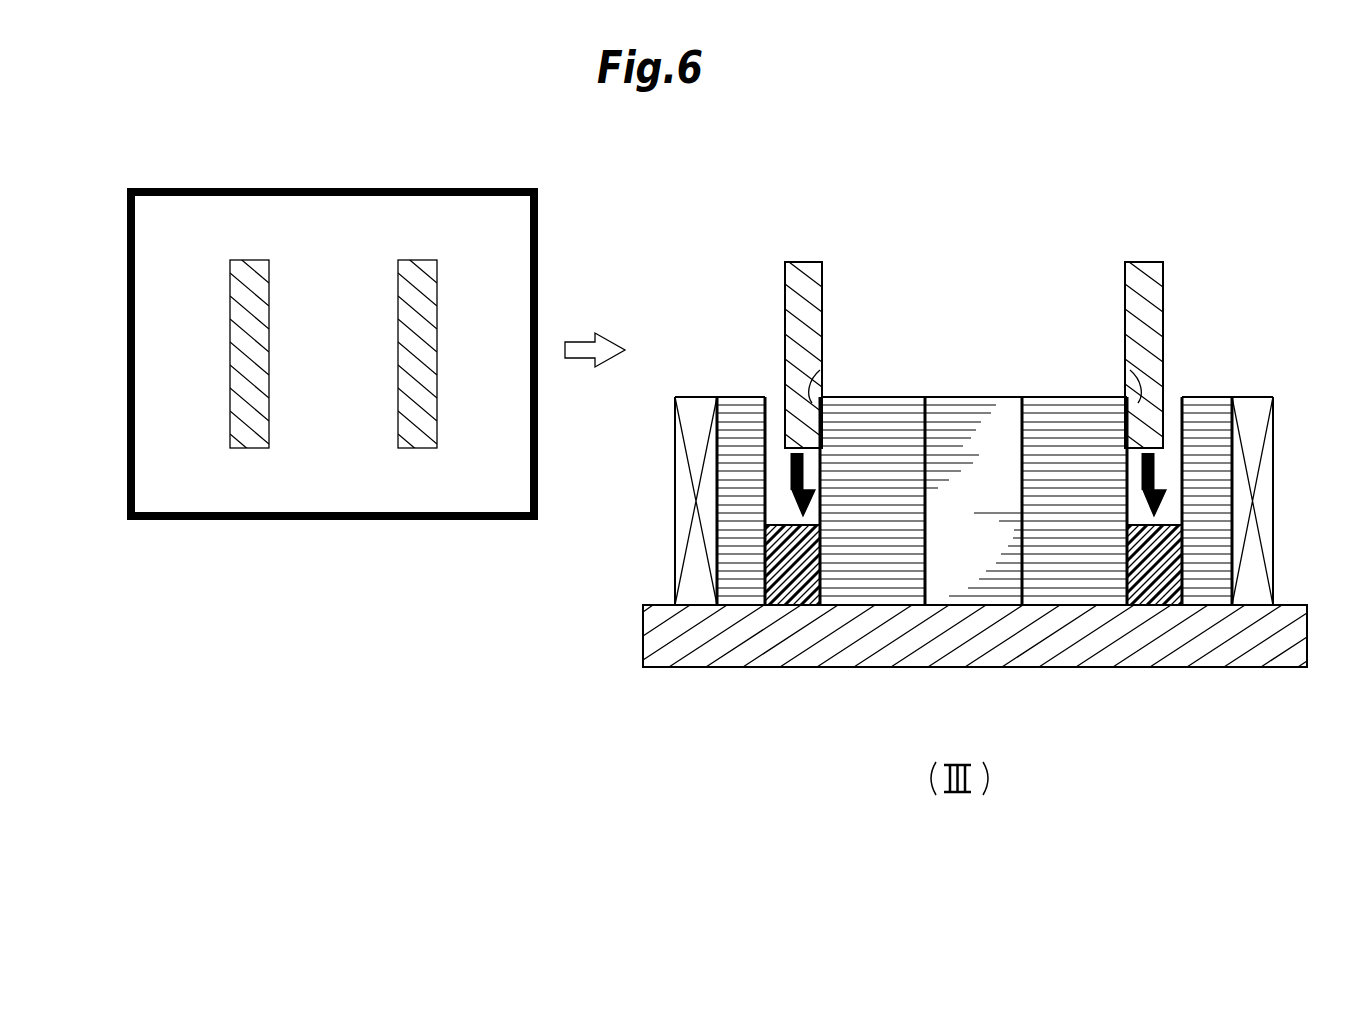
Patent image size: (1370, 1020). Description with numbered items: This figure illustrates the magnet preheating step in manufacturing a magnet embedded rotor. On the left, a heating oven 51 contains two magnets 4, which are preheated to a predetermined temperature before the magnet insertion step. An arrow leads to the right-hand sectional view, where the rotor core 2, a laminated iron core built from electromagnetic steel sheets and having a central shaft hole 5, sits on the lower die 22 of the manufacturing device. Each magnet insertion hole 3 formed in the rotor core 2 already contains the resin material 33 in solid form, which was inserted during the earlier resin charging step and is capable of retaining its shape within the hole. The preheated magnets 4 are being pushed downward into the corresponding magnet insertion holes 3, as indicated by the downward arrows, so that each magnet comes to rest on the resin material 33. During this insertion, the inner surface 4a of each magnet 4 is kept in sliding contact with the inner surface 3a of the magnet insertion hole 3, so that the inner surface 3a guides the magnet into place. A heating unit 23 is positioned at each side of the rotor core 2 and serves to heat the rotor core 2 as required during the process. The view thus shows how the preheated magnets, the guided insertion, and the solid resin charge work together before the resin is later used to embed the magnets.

The heating oven 51 is at (400, 188).
The magnet 4 is at (257, 293).
The inner surface of the magnet 4a is at (822, 283).
The magnet insertion hole 3 is at (768, 456).
The inner surface of the magnet insertion hole 3a is at (822, 373).
The shaft hole 5 is at (930, 433).
The rotor core 2 is at (969, 399).
The heating unit 23 is at (683, 487).
The resin material 33 is at (789, 604).
The lower die 22 is at (1048, 647).